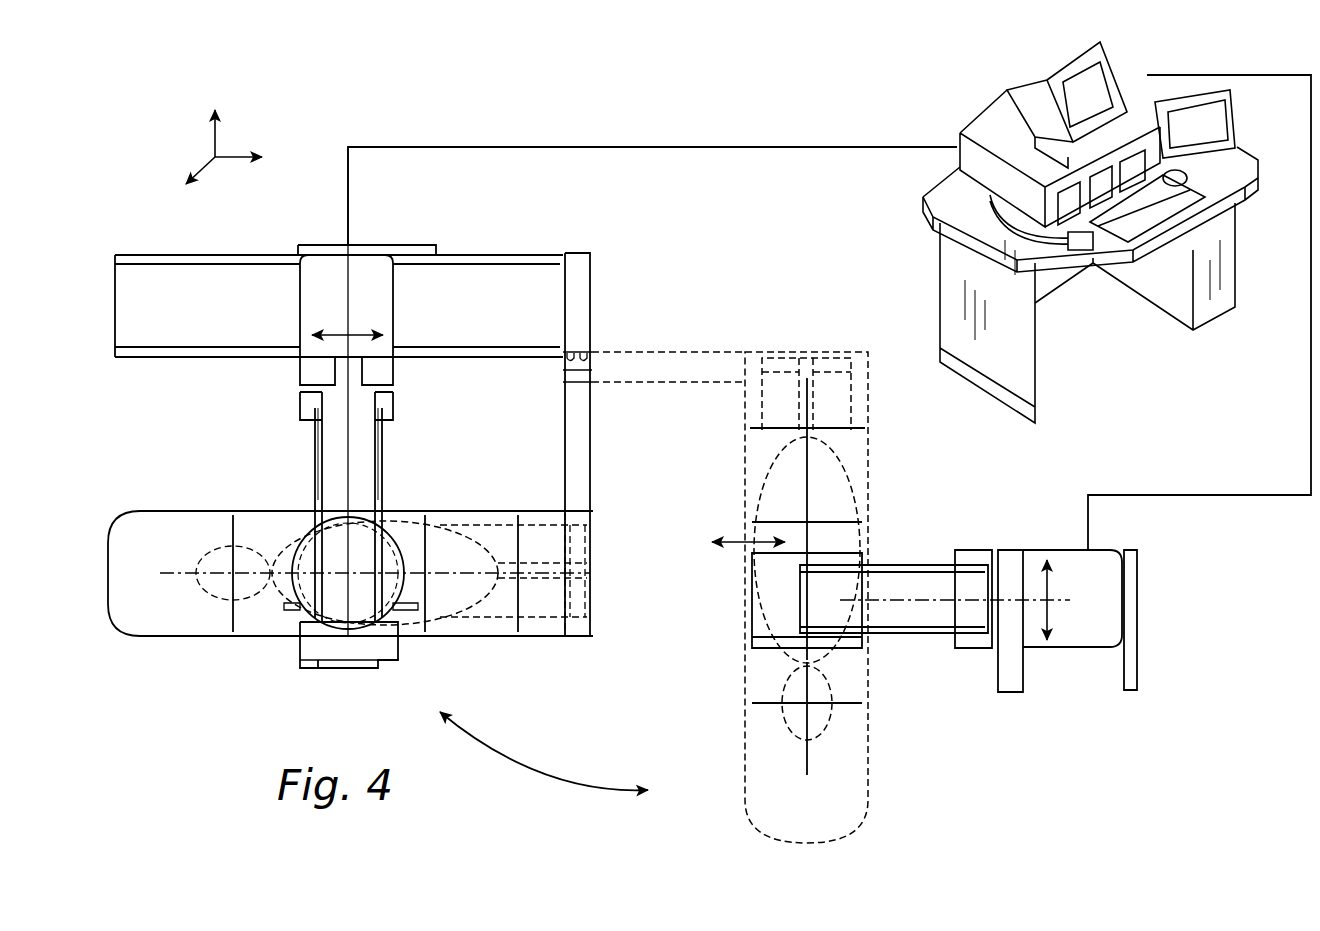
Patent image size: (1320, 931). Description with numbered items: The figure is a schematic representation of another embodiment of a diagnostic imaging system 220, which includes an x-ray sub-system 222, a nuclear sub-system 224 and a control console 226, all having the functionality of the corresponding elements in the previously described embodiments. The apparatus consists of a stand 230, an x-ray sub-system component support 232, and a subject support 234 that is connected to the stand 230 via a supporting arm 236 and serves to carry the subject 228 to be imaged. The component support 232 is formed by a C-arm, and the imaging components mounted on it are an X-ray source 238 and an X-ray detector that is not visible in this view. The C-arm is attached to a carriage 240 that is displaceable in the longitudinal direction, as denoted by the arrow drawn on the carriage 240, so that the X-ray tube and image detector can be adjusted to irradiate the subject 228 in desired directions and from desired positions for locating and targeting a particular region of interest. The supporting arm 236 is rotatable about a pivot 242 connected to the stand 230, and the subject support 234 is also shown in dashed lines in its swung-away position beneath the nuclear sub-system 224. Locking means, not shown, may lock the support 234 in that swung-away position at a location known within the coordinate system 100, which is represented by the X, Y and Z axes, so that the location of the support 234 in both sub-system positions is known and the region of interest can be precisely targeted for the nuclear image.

The coordinate system 100 is at (190, 145).
The diagnostic imaging system 220 is at (465, 100).
The x-ray sub-system 222 is at (398, 228).
The nuclear sub-system 224 is at (1152, 572).
The control console 226 is at (935, 72).
The subject 228 is at (458, 548).
The stand 230 is at (583, 298).
The x-ray sub-system component support 232 is at (330, 490).
The subject support 234 is at (192, 640).
The supporting arm 236 is at (666, 372).
The X-ray source 238 is at (372, 618).
The carriage 240 is at (313, 320).
The pivot 242 is at (588, 372).